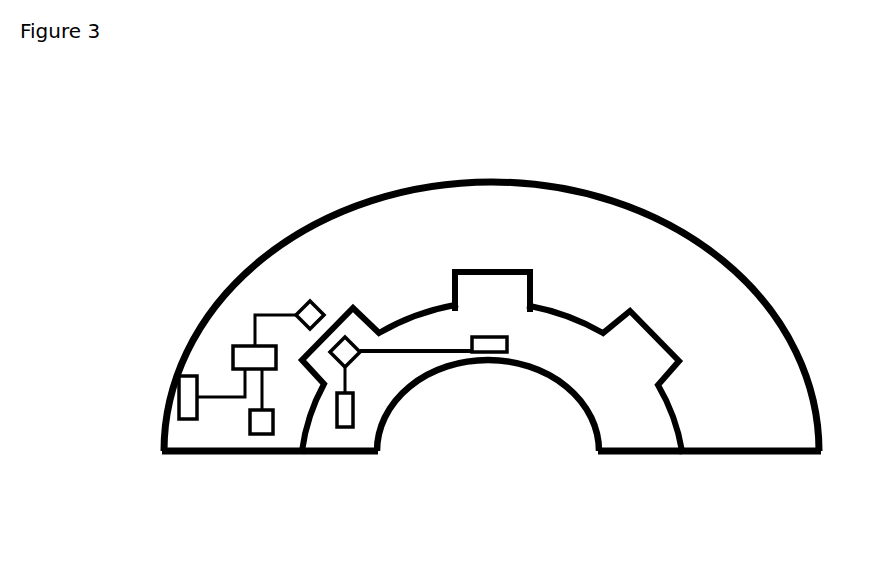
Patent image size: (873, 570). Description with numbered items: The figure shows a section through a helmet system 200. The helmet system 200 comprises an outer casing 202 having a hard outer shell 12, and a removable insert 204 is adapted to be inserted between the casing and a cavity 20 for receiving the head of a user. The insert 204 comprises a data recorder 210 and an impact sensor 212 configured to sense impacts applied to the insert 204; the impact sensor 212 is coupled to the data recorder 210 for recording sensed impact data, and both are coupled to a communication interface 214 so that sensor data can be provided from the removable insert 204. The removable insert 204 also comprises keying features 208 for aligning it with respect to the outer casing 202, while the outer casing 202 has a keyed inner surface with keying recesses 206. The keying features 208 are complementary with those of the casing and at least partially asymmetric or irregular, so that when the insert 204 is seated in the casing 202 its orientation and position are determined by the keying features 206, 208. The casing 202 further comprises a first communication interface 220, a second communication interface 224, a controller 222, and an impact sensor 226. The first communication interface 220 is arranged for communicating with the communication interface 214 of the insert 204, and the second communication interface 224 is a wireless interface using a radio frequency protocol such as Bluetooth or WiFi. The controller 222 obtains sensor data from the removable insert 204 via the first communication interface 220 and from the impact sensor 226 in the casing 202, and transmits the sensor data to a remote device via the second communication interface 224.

The helmet system 200 is at (200, 248).
The hard outer shell 12 is at (722, 253).
The cavity 20 is at (488, 405).
The outer casing 202 is at (735, 410).
The removable insert 204 is at (337, 440).
The keying recesses 206 is at (495, 270).
The keying features 208 is at (490, 293).
The data recorder 210 is at (498, 343).
The impact sensor 212 is at (347, 410).
The communication interface 214 is at (345, 337).
The first communication interface 220 is at (308, 303).
The controller 222 is at (247, 358).
The second communication interface 224 is at (190, 398).
The impact sensor 226 is at (262, 423).